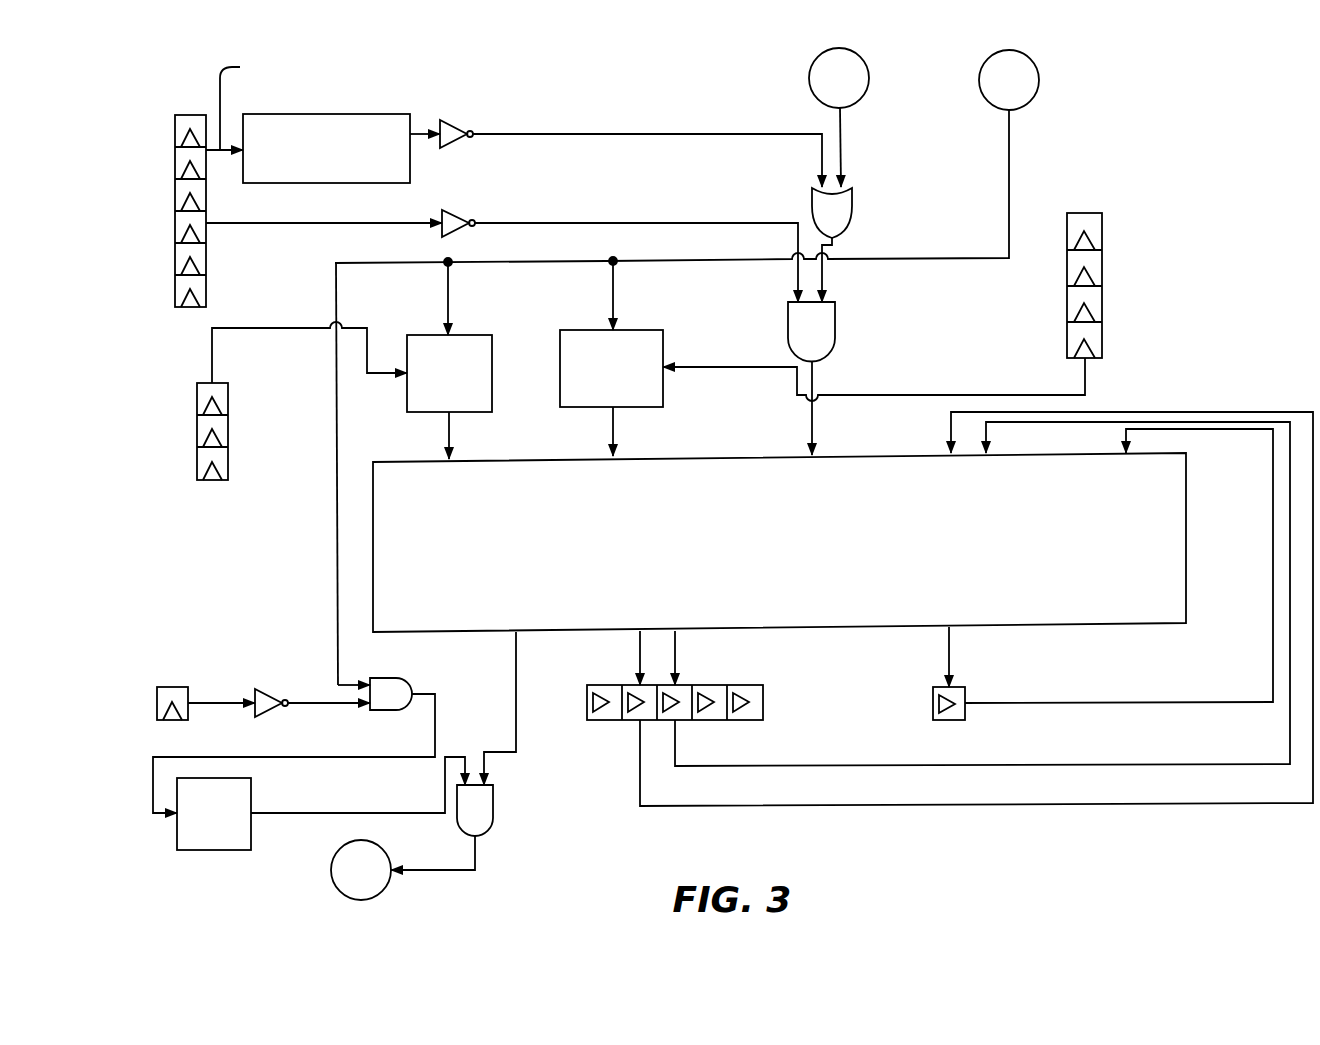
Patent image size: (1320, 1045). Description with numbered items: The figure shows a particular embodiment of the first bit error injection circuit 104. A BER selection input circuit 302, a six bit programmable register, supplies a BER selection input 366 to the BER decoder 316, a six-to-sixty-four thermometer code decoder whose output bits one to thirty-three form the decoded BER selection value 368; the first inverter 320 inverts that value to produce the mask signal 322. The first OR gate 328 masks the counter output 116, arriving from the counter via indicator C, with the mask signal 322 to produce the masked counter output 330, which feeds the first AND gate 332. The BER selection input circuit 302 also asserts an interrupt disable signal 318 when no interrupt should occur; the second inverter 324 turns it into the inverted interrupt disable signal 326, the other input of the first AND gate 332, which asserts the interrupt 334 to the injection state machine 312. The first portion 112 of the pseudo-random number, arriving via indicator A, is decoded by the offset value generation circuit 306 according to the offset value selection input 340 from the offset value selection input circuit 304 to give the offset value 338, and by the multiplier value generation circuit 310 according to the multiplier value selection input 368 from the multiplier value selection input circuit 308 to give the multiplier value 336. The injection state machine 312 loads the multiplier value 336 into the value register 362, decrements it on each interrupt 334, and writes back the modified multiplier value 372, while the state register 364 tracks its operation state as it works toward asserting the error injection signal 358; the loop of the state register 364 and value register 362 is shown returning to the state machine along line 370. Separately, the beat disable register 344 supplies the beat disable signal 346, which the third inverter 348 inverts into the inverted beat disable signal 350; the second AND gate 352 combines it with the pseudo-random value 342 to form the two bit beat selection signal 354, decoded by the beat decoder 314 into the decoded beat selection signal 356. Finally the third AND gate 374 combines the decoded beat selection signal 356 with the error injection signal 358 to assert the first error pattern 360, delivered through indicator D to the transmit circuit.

The first bit error injection circuit 104 is at (1230, 84).
The first portion of the pseudo-random number 112 is at (447, 296).
The counter output 116 is at (842, 136).
The BER selection input circuit 302 is at (192, 113).
The offset value selection input circuit 304 is at (199, 382).
The offset value generation circuit 306 is at (468, 333).
The multiplier value selection input circuit 308 is at (1102, 268).
The multiplier value generation circuit 310 is at (598, 408).
The injection state machine 312 is at (779, 542).
The beat decoder 314 is at (215, 850).
The BER decoder 316 is at (328, 113).
The interrupt disable signal 318 is at (262, 224).
The first inverter 320 is at (449, 118).
The mask signal 322 is at (793, 131).
The second inverter 324 is at (457, 236).
The inverted interrupt disable signal 326 is at (625, 222).
The first OR gate 328 is at (853, 192).
The masked counter output 330 is at (825, 270).
The first AND gate 332 is at (788, 328).
The interrupt 334 is at (814, 418).
The multiplier value 336 is at (617, 420).
The offset value 338 is at (447, 428).
The offset value selection input 340 is at (240, 330).
The pseudo-random value 342 is at (291, 597).
The beat disable register 344 is at (173, 722).
The beat disable signal 346 is at (215, 704).
The third inverter 348 is at (268, 688).
The inverted beat disable signal 350 is at (305, 704).
The second AND gate 352 is at (383, 678).
The beat selection signal 354 is at (440, 682).
The decoded beat selection signal 356 is at (290, 813).
The error injection signal 358 is at (516, 726).
The first error pattern 360 is at (477, 855).
The value register 362 is at (763, 705).
The state register 364 is at (965, 718).
The BER selection input 366 is at (241, 104).
The decoded BER selection value 368 is at (432, 124).
The CNT_Next feedback line 370 is at (677, 650).
The modified multiplier value 372 is at (640, 650).
The third AND gate 374 is at (493, 812).